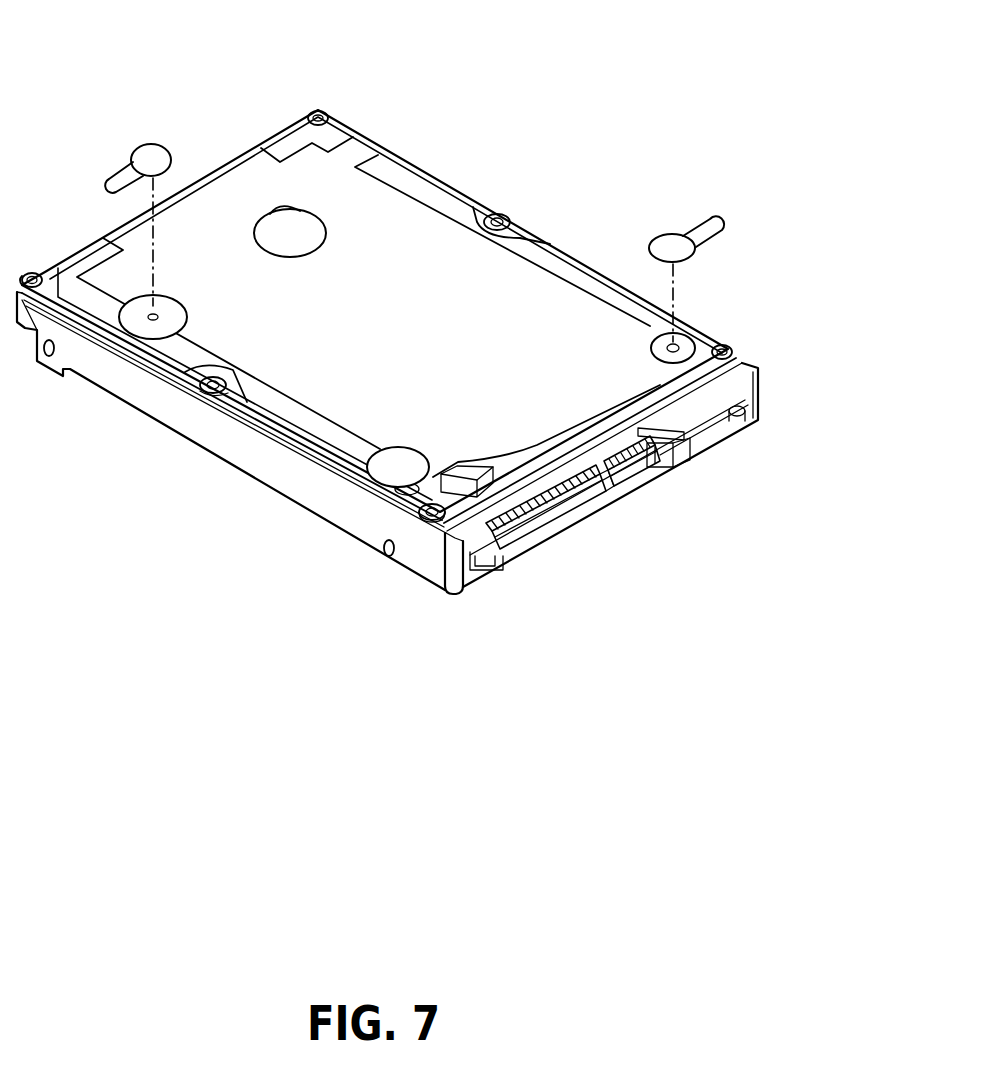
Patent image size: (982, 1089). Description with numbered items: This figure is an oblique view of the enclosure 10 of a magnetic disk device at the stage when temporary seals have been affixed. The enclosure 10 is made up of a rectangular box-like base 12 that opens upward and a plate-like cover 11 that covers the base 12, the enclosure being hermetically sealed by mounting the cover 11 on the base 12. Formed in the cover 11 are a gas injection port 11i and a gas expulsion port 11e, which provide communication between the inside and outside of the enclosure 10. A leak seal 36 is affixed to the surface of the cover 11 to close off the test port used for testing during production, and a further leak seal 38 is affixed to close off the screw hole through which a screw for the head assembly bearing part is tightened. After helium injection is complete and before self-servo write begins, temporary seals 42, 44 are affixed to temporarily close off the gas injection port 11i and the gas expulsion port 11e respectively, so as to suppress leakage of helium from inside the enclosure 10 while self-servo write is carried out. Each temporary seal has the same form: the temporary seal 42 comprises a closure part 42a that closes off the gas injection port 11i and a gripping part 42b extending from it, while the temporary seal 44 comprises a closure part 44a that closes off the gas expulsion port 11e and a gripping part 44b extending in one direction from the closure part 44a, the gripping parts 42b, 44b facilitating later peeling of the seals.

The enclosure 10 is at (601, 116).
The cover 11 is at (440, 233).
The gas injection port 11i is at (168, 307).
The gas expulsion port 11e is at (652, 340).
The base 12 is at (249, 455).
The leak seal 36 is at (398, 460).
The leak seal 38 is at (294, 228).
The temporary seal 42 is at (158, 120).
The closure part 42a is at (153, 163).
The gripping part 42b is at (113, 178).
The temporary seal 44 is at (737, 168).
The closure part 44a is at (675, 248).
The gripping part 44b is at (710, 226).